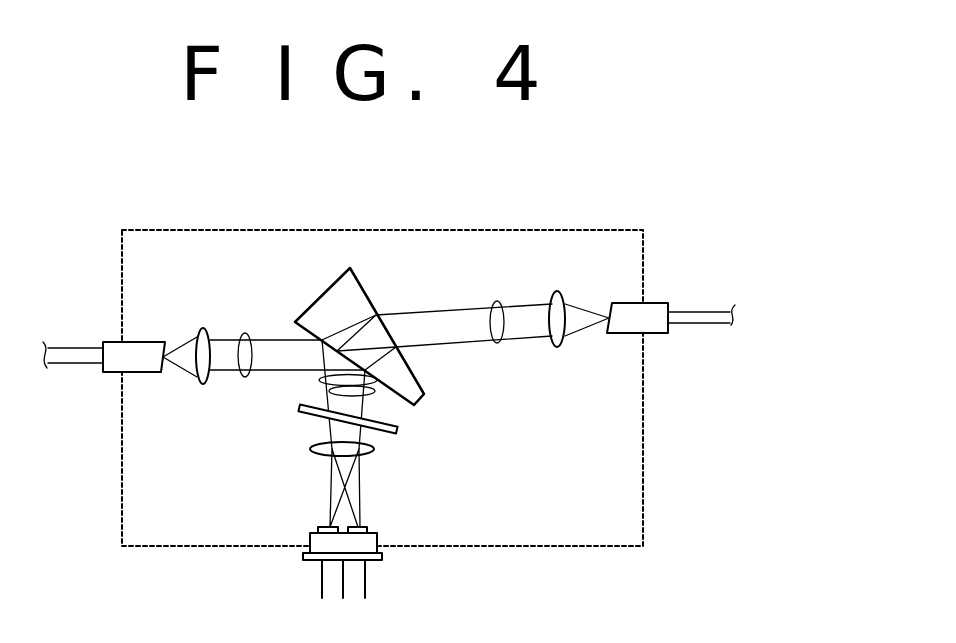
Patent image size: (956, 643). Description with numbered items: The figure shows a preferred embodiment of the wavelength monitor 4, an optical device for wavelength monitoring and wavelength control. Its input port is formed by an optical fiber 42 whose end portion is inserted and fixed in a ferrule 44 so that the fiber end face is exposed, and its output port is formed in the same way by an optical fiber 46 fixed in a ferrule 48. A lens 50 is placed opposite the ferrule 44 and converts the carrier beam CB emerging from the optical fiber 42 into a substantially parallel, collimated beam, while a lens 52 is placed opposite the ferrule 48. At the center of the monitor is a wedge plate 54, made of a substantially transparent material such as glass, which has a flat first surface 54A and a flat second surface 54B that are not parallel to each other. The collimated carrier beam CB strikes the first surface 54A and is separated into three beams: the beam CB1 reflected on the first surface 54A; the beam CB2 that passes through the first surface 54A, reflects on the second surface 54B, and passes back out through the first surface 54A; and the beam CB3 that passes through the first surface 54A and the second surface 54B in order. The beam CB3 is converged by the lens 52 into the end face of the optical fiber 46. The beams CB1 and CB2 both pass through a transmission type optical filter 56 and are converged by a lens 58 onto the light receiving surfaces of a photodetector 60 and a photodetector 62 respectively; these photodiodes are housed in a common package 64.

The wavelength monitor 4 is at (512, 230).
The optical fiber 42 is at (64, 366).
The ferrule 44 is at (140, 342).
The optical fiber 46 is at (695, 324).
The ferrule 48 is at (665, 303).
The lens 50 is at (202, 328).
The lens 52 is at (557, 291).
The wedge plate 54 is at (418, 405).
The first surface 54A is at (397, 395).
The second surface 54B is at (415, 374).
The transmission type optical filter 56 is at (299, 409).
The lens 58 is at (311, 450).
The photodetector 60 is at (360, 527).
The photodetector 62 is at (318, 527).
The common package 64 is at (304, 561).
The carrier beam CB is at (245, 333).
The beam CB1 is at (321, 380).
The beam CB2 is at (373, 390).
The beam CB3 is at (497, 302).